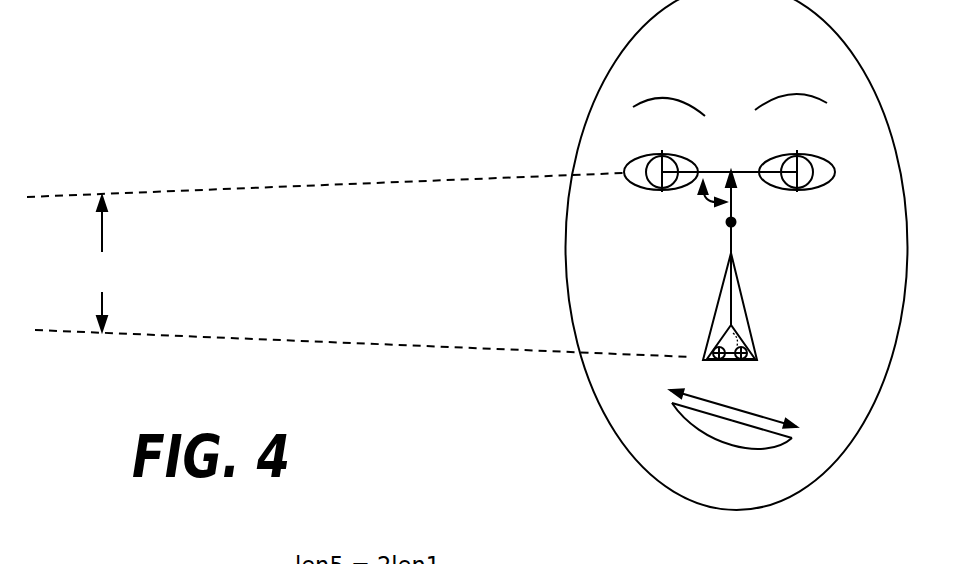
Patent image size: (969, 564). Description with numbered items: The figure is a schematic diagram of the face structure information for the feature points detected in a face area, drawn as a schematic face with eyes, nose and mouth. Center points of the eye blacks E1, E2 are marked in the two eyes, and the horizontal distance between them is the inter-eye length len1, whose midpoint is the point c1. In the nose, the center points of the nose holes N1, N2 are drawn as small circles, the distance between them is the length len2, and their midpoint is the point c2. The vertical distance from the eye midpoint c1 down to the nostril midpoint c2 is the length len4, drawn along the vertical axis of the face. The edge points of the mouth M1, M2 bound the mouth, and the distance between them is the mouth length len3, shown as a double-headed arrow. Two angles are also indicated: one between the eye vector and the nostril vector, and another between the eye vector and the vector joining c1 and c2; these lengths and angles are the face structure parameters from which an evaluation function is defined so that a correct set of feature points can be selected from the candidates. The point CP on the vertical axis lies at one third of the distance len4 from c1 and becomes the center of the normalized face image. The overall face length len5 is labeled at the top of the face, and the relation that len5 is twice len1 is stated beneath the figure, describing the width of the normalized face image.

The width of normalized face image len5 is at (737, 255).
The distance between eye centers len1 is at (703, 172).
The midpoint between eye centers c1 is at (739, 159).
The center point of eye black E1 is at (655, 184).
The center point of eye black E2 is at (803, 184).
The distance between midpoints C1 and C2 len4 is at (756, 196).
The center point of face image CP is at (753, 233).
The midpoint between nose holes c2 is at (716, 291).
The center point of nose hole N1 is at (701, 368).
The center point of nose hole N2 is at (766, 368).
The distance between nose holes len2 is at (744, 371).
The mouth length len3 is at (741, 408).
The edge point of mouth M1 is at (714, 426).
The edge point of mouth M2 is at (781, 443).